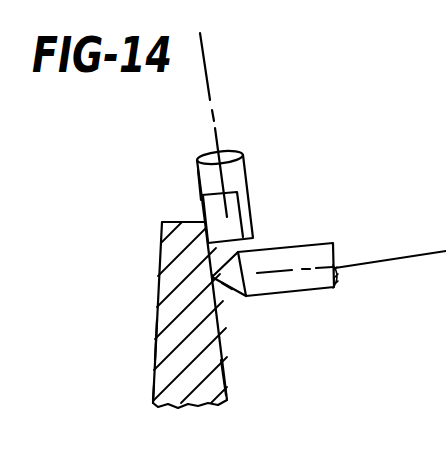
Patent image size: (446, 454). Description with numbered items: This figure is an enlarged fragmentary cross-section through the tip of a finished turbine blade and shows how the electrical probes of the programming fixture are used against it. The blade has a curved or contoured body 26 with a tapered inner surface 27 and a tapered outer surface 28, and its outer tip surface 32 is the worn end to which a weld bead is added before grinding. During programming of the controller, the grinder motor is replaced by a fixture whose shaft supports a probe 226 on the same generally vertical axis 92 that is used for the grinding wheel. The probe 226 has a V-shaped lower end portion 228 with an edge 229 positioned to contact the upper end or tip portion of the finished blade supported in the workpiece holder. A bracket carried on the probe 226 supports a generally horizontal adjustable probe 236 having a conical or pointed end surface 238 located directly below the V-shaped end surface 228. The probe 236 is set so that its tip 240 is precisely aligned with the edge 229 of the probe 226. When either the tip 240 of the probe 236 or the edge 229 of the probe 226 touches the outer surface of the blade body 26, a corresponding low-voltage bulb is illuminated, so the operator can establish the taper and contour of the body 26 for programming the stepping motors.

The vertical axis 92 is at (204, 52).
The probe 226 is at (243, 172).
The V-shaped lower end portion 228 is at (237, 212).
The edge 229 is at (200, 205).
The outer tip surface 32 is at (172, 222).
The tapered outer surface 28 is at (153, 343).
The curved or contoured body 26 is at (152, 389).
The tapered inner surface 27 is at (224, 381).
The adjustable probe 236 is at (310, 285).
The tip 240 is at (212, 277).
The conical or pointed end surface 238 is at (230, 296).